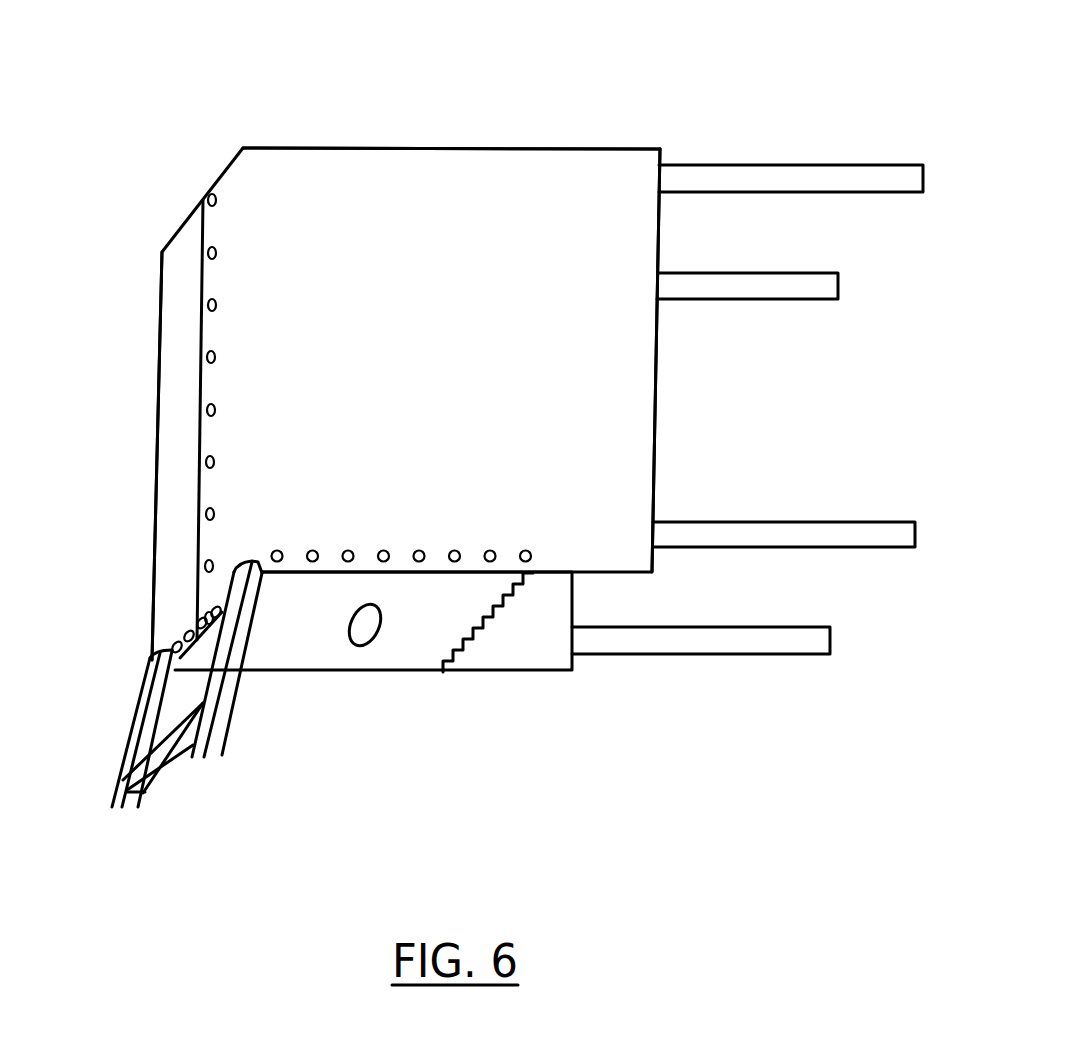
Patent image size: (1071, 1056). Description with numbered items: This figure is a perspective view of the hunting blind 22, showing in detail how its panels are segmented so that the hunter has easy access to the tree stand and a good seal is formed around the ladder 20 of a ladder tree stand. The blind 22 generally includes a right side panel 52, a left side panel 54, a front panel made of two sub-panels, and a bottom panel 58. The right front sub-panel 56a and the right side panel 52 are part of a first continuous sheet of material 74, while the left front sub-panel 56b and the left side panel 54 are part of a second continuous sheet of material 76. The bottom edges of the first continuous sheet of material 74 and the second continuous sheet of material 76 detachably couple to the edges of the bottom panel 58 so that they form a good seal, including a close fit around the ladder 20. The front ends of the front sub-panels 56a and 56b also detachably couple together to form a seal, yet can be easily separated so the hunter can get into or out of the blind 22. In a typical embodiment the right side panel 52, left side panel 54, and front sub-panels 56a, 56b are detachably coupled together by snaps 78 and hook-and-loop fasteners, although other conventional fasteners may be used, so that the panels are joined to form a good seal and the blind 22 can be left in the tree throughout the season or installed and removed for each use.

The ladder 20 is at (122, 767).
The hunting blind 22 is at (508, 140).
The right side panel 52 is at (642, 423).
The left side panel 54 is at (537, 652).
The right front sub-panel 56a is at (233, 193).
The left front sub-panel 56b is at (183, 252).
The bottom panel 58 is at (417, 653).
The first continuous sheet of material 74 is at (343, 148).
The second continuous sheet of material 76 is at (154, 358).
The snaps 78 is at (202, 482).